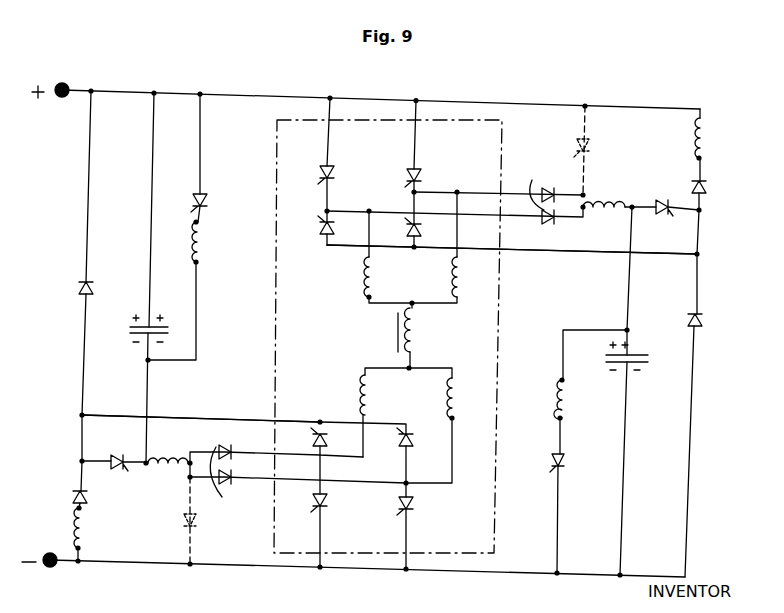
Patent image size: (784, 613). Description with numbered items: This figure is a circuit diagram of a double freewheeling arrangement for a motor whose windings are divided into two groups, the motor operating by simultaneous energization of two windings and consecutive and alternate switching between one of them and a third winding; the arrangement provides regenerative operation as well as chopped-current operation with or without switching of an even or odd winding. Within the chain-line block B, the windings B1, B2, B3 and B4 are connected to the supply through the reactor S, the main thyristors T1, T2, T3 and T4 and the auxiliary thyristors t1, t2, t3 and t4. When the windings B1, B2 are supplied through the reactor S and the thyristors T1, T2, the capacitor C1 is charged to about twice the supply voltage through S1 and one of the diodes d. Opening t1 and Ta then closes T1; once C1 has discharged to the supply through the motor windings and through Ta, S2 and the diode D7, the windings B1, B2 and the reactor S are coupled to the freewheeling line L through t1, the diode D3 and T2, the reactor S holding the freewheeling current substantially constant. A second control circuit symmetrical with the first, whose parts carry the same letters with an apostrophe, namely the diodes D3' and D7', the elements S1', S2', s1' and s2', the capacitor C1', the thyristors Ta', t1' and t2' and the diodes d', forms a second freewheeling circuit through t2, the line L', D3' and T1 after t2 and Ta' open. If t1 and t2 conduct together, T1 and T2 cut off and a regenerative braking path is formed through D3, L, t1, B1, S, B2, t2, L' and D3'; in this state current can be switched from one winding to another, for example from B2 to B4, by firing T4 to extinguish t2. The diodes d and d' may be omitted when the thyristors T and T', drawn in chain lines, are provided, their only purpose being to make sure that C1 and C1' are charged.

The diode D3' is at (98, 279).
The diode D7' is at (93, 498).
The inductor S2' is at (58, 528).
The capacitor C1' is at (135, 340).
The thyristor t2' is at (208, 198).
The inductor s2' is at (211, 242).
The freewheeling line L' is at (201, 405).
The thyristor Ta' is at (112, 445).
The inductor S1' is at (168, 477).
The thyristor T' is at (171, 520).
The diodes d' is at (225, 476).
The bridge inverter block B is at (271, 334).
The thyristor T1 is at (334, 172).
The thyristor t1 is at (313, 233).
The main thyristor T3 is at (421, 170).
The auxiliary thyristor t3 is at (404, 234).
The winding B1 is at (362, 285).
The commutating inductor B3 is at (450, 288).
The reactor S is at (390, 339).
The winding B2 is at (359, 400).
The winding B4 is at (444, 403).
The thyristor t2 is at (305, 438).
The auxiliary thyristor t4 is at (398, 447).
The thyristor T2 is at (328, 500).
The thyristor T4 is at (416, 503).
The thyristor T is at (594, 150).
The diodes d is at (535, 192).
The inductor S1 is at (604, 187).
The thyristor Ta is at (661, 194).
The inductor S2 is at (677, 138).
The diode D7 is at (716, 187).
The freewheeling line L is at (512, 261).
The diode D3 is at (711, 322).
The capacitor C1 is at (643, 362).
The inductor s1' is at (543, 399).
The thyristor t1' is at (543, 460).